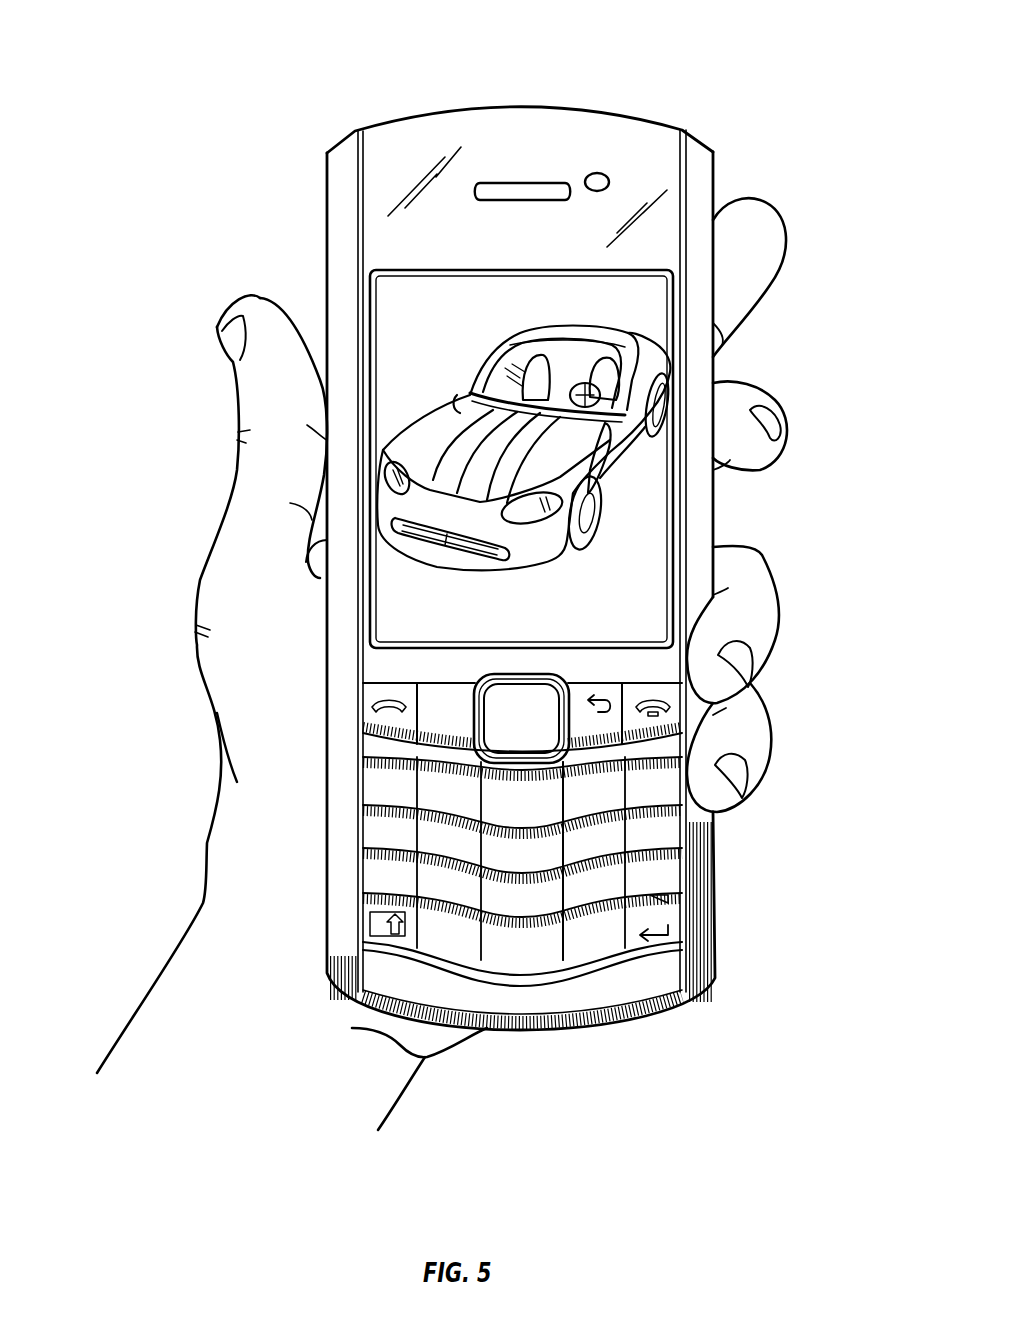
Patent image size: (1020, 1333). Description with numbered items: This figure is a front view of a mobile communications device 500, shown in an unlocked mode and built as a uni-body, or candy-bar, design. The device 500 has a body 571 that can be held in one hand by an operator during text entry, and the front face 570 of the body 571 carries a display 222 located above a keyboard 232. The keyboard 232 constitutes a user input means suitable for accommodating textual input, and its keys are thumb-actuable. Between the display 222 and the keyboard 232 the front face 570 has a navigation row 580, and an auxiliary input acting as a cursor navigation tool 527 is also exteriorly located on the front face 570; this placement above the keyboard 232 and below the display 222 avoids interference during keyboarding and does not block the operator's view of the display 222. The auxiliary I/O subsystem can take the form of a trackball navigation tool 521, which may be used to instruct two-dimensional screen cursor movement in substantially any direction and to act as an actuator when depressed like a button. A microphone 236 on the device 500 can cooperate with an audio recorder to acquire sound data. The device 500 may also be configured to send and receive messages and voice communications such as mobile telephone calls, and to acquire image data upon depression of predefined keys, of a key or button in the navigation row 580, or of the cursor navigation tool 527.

The mobile communications device 500 is at (460, 564).
The microphone 236 is at (600, 173).
The body 571 is at (323, 159).
The front face 570 is at (700, 195).
The display 222 is at (399, 313).
The navigation row 580 is at (345, 732).
The trackball navigation tool 521 is at (522, 714).
The cursor navigation tool 527 is at (545, 760).
The keyboard 232 is at (534, 988).